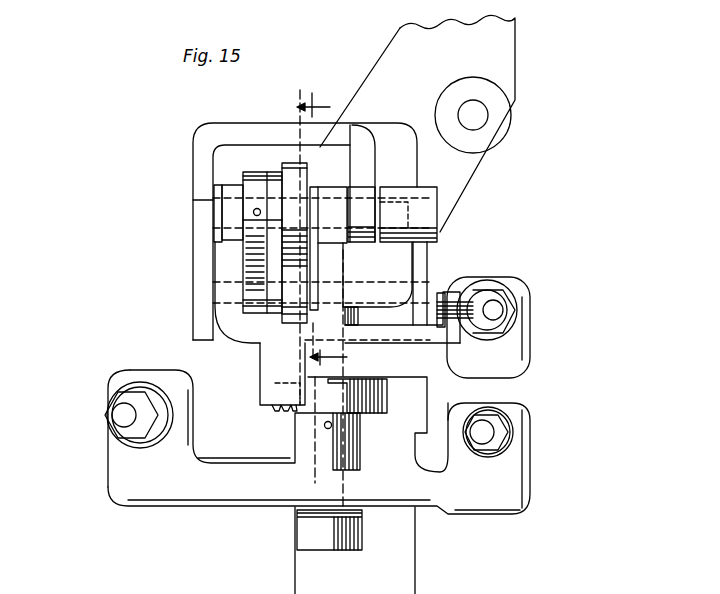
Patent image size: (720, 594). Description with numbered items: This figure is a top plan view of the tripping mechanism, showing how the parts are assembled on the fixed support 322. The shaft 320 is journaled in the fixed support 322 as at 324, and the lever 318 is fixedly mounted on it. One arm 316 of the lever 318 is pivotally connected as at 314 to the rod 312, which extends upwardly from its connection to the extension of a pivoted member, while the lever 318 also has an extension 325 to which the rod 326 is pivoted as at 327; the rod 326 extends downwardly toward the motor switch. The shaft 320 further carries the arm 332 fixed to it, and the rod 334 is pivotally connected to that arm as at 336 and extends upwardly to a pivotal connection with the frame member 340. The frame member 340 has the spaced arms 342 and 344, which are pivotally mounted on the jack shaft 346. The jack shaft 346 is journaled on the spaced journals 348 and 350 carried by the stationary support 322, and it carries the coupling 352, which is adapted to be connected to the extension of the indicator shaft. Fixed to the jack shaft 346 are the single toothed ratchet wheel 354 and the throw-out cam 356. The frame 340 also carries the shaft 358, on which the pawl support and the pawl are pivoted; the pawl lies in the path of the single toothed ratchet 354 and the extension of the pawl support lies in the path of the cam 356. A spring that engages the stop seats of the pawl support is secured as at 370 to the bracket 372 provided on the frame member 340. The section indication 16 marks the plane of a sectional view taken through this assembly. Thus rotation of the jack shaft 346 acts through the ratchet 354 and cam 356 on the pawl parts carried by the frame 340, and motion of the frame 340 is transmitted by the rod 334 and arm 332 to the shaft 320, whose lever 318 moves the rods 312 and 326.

The section line 16- 16 is at (333, 222).
The rod 312 is at (487, 433).
The pivotal connection 314 is at (515, 408).
The arm 316 is at (513, 483).
The lever 318 is at (232, 502).
The shaft 320 is at (315, 483).
The fixed support 322 is at (257, 130).
The journal 324 is at (360, 527).
The extension 325 is at (148, 502).
The rod 326 is at (125, 417).
The pivot 327 is at (128, 390).
The arm 332 is at (522, 322).
The rod 334 is at (478, 300).
The pivotal connection 336 is at (522, 295).
The frame member 340 is at (400, 330).
The arm 342 is at (228, 258).
The arm 344 is at (332, 245).
The jack shaft 346 is at (200, 212).
The journal 348 is at (188, 187).
The journal 350 is at (358, 213).
The coupling 352 is at (427, 192).
The single toothed ratchet wheel 354 is at (350, 125).
The throw-out cam 356 is at (252, 178).
The shaft 358 is at (338, 290).
The spring securing point 370 is at (270, 408).
The bracket 372 is at (272, 369).